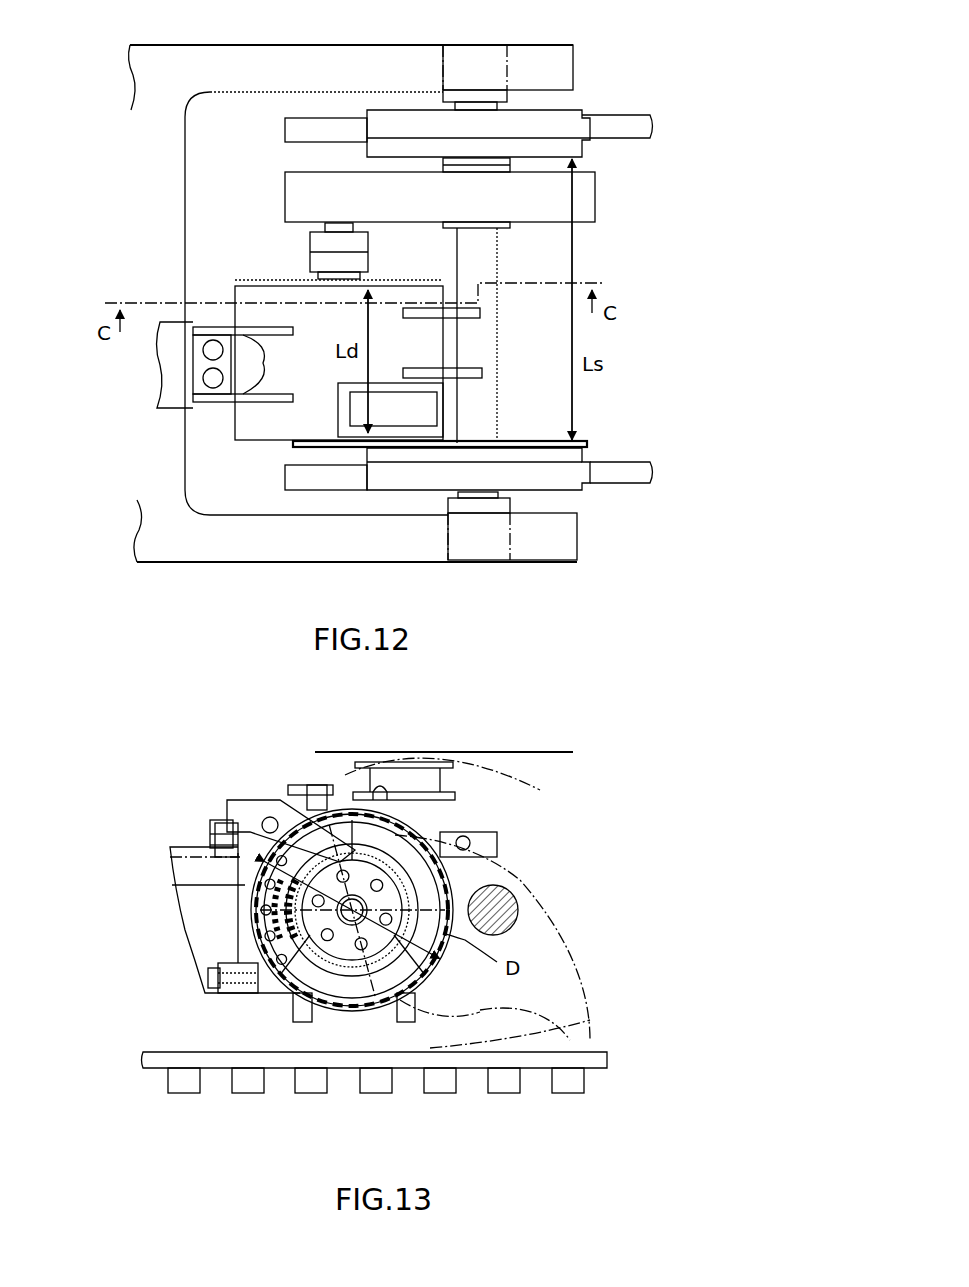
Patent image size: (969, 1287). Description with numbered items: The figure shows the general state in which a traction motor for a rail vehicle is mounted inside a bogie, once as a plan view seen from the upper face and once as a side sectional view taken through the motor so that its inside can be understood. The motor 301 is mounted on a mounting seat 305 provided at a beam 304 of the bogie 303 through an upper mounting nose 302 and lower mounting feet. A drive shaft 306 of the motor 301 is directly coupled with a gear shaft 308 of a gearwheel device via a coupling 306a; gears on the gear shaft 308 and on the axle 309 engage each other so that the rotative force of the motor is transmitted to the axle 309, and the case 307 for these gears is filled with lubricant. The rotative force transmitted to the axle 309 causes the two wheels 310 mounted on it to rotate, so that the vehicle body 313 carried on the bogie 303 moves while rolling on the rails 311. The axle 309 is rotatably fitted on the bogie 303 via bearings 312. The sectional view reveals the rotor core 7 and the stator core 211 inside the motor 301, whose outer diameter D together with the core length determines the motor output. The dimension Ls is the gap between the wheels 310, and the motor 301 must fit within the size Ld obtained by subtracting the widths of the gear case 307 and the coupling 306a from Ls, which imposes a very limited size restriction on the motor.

In FIG. 13, the rotor core 7 is at (178, 884).
In FIG. 13, the stator core 211 is at (407, 875).
In FIG. 12, the motor 301 is at (245, 312).
In FIG. 13, the motor 301 is at (215, 820).
In FIG. 12, the upper mounting nose 302 is at (266, 363).
In FIG. 13, the upper mounting nose 302 is at (252, 800).
In FIG. 12, the bogie 303 is at (152, 83).
In FIG. 12, the beam 304 is at (170, 466).
In FIG. 12, the mounting seat 305 is at (175, 372).
In FIG. 13, the mounting seat 305 is at (190, 922).
In FIG. 12, the drive shaft 306 is at (320, 278).
In FIG. 13, the drive shaft 306 is at (342, 993).
In FIG. 12, the coupling 306a is at (315, 243).
In FIG. 12, the case 307 is at (543, 208).
In FIG. 12, the gear shaft 308 is at (340, 224).
In FIG. 12, the axle 309 is at (500, 296).
In FIG. 13, the axle 309 is at (520, 910).
In FIG. 12, the wheels 310 is at (590, 148).
In FIG. 13, the wheels 310 is at (510, 790).
In FIG. 12, the rails 311 is at (285, 130).
In FIG. 13, the rails 311 is at (472, 1068).
In FIG. 12, the bearings 312 is at (507, 95).
In FIG. 13, the vehicle body 313 is at (586, 722).